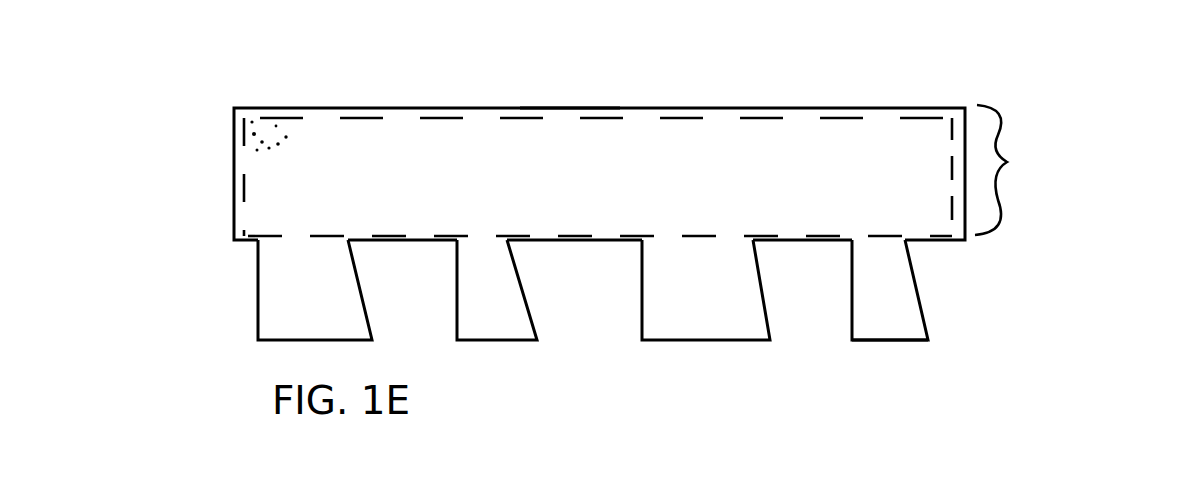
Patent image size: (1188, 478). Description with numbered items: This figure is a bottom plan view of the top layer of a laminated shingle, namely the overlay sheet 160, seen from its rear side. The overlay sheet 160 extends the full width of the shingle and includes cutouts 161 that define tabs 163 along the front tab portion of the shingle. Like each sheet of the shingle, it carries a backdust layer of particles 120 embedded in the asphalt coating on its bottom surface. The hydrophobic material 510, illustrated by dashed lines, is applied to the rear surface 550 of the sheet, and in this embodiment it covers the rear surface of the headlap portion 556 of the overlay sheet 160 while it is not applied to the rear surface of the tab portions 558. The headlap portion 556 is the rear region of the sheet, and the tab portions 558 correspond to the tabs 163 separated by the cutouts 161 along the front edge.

The backdust layer of particles 120 is at (265, 132).
The overlay sheet 160 is at (557, 134).
The cutouts 161 is at (592, 316).
The tabs 163 is at (887, 315).
The hydrophobic material 510 is at (777, 118).
The rear surface 550 is at (875, 147).
The headlap portion 556 is at (1007, 162).
The tab portions 558 is at (283, 295).